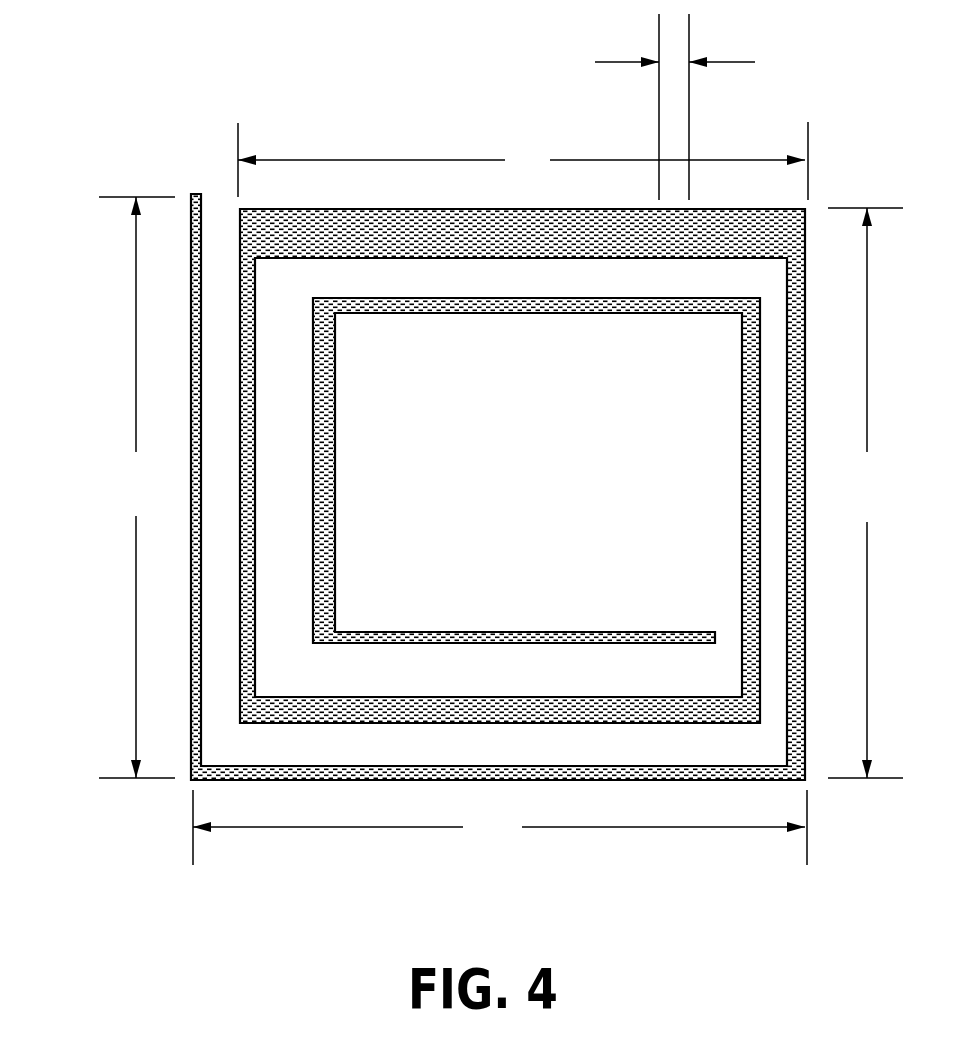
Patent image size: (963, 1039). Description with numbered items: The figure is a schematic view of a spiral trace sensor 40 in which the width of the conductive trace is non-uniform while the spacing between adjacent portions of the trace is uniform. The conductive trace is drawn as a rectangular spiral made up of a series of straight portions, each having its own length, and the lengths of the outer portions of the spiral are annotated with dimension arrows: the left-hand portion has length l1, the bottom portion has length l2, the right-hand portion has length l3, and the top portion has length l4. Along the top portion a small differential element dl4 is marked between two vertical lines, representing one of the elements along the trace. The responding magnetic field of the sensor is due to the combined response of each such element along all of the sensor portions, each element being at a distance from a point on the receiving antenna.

The sensor 40 is at (422, 429).
The length of a sensor trace portion l1 is at (137, 487).
The length of a sensor trace portion l2 is at (500, 827).
The length of a sensor trace portion l3 is at (865, 493).
The length of a sensor trace portion l4 is at (523, 161).
The element of a sensor trace portion dl4 is at (701, 107).